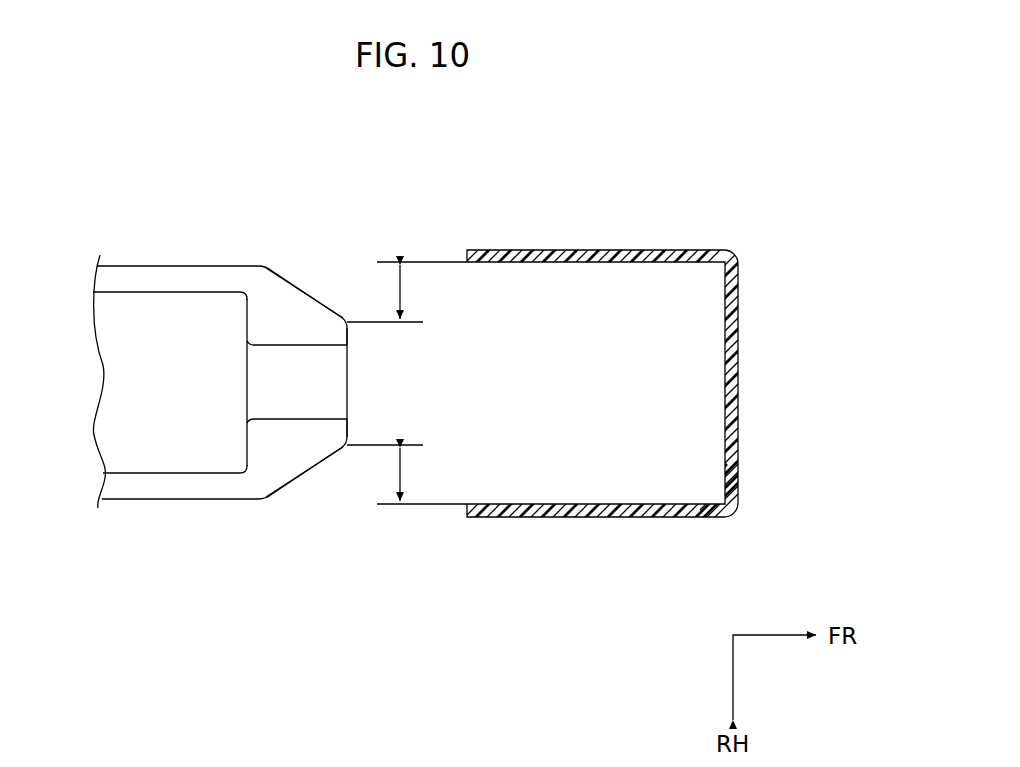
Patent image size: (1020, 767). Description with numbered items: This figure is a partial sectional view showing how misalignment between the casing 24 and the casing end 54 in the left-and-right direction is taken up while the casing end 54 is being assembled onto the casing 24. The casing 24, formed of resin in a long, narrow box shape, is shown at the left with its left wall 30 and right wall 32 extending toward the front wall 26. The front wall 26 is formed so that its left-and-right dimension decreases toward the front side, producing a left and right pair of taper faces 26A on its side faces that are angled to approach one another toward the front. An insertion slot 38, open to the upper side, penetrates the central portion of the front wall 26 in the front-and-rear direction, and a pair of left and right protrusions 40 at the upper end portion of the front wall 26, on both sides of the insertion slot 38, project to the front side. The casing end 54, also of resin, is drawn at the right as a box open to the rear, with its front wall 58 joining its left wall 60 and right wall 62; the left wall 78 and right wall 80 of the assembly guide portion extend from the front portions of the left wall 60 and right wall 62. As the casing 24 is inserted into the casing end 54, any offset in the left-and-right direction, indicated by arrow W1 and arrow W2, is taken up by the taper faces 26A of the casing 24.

The casing 24 is at (141, 258).
The left wall 30 is at (187, 265).
The right wall 32 is at (160, 501).
The front wall 26 is at (247, 419).
The taper faces 26A is at (288, 280).
The insertion slot 38 is at (247, 345).
The protrusions 40 is at (329, 320).
The casing end 54 is at (521, 245).
The front wall 58 is at (740, 382).
The left wall 60 is at (593, 199).
The left wall 78 is at (618, 248).
The right wall 62 is at (593, 555).
The right wall 80 is at (578, 519).
The arrow W1 is at (402, 293).
The arrow W2 is at (402, 468).